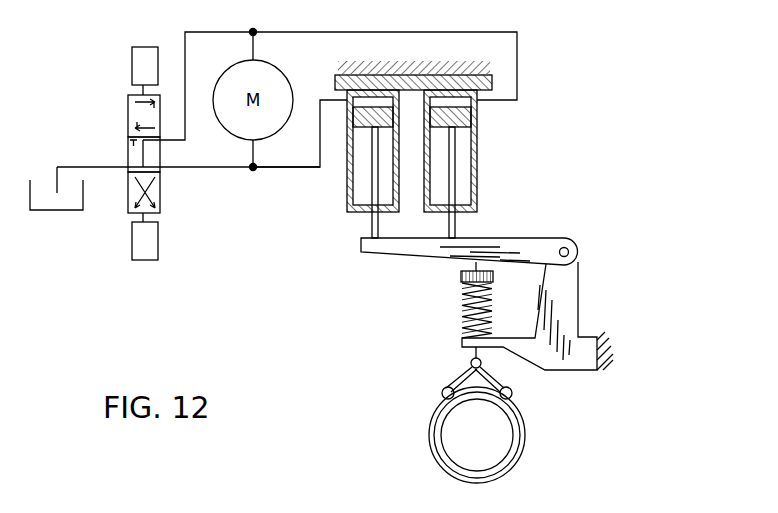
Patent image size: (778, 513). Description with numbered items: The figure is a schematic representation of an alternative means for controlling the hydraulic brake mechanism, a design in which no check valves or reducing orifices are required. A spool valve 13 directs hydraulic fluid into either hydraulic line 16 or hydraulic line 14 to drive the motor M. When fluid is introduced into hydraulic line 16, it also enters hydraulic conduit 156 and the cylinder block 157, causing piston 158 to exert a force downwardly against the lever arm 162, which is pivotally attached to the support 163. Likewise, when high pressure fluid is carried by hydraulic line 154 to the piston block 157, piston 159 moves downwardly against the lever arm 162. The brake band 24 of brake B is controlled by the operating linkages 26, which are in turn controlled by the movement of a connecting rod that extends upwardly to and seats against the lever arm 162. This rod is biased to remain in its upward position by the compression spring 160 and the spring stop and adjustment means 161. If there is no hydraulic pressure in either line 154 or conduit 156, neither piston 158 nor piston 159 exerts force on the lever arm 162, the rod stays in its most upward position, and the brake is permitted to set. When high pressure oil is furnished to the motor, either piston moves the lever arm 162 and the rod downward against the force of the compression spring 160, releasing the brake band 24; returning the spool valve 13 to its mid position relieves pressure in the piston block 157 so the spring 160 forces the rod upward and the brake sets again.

The spool valve 13 is at (128, 110).
The hydraulic line 14 is at (220, 168).
The hydraulic line 16 is at (201, 31).
The brake band 24 is at (526, 432).
The operating linkages 26 is at (458, 381).
The hydraulic line 154 is at (306, 168).
The hydraulic conduit 156 is at (352, 31).
The cylinder block 157 is at (335, 88).
The piston 158 is at (460, 229).
The piston 159 is at (367, 227).
The compression spring 160 is at (460, 312).
The spring stop and adjustment means 161 is at (458, 275).
The lever arm 162 is at (528, 248).
The support 163 is at (567, 305).